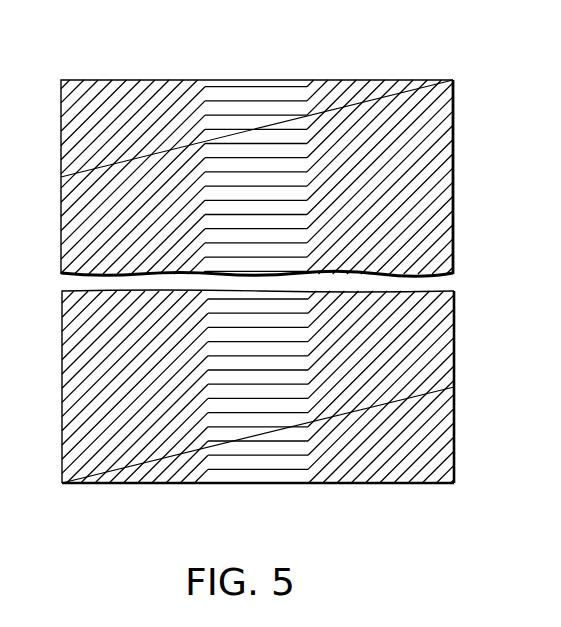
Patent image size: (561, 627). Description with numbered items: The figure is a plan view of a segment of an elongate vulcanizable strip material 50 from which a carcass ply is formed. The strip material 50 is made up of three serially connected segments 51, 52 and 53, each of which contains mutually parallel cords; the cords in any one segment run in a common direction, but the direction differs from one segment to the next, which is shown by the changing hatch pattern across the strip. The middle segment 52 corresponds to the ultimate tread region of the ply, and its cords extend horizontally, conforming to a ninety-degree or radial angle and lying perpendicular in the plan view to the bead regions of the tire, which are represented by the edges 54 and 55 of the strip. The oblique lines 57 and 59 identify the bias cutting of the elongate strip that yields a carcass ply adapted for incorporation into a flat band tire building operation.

The elongate vulcanizable strip material 50 is at (462, 430).
The segment 51 is at (375, 249).
The segment 52 is at (278, 263).
The segment 53 is at (140, 231).
The edge 54 is at (454, 345).
The edge 55 is at (62, 360).
The line 57 is at (152, 472).
The line 59 is at (146, 148).